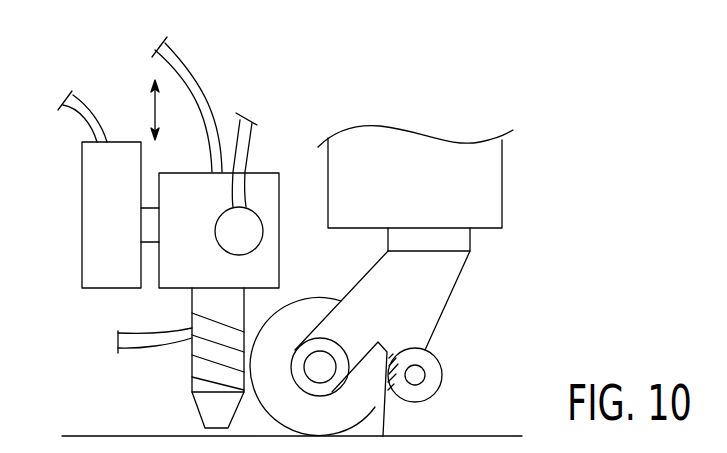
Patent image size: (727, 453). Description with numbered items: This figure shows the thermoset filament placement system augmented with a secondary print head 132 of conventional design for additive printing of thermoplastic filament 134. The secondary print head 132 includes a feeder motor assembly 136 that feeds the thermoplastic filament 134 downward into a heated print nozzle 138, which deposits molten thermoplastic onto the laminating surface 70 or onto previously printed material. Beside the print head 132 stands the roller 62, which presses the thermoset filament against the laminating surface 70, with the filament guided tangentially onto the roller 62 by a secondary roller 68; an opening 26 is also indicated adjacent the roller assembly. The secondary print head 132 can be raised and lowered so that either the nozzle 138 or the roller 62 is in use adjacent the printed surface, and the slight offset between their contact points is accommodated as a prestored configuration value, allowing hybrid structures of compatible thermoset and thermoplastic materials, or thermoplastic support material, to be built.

The opening 26 is at (387, 404).
The roller 62 is at (310, 310).
The secondary roller 68 is at (436, 355).
The laminating surface 70 is at (133, 436).
The secondary print head 132 is at (111, 371).
The thermoplastic filament 134 is at (207, 97).
The feeder motor assembly 136 is at (258, 172).
The heated print nozzle 138 is at (192, 367).